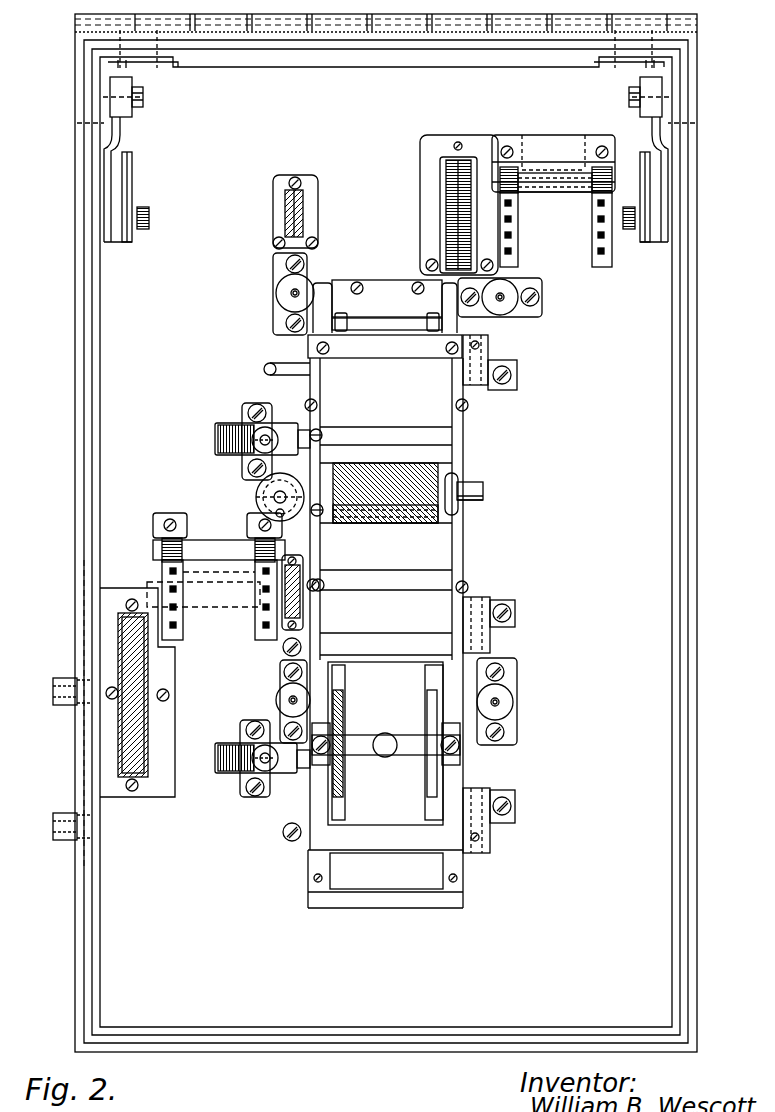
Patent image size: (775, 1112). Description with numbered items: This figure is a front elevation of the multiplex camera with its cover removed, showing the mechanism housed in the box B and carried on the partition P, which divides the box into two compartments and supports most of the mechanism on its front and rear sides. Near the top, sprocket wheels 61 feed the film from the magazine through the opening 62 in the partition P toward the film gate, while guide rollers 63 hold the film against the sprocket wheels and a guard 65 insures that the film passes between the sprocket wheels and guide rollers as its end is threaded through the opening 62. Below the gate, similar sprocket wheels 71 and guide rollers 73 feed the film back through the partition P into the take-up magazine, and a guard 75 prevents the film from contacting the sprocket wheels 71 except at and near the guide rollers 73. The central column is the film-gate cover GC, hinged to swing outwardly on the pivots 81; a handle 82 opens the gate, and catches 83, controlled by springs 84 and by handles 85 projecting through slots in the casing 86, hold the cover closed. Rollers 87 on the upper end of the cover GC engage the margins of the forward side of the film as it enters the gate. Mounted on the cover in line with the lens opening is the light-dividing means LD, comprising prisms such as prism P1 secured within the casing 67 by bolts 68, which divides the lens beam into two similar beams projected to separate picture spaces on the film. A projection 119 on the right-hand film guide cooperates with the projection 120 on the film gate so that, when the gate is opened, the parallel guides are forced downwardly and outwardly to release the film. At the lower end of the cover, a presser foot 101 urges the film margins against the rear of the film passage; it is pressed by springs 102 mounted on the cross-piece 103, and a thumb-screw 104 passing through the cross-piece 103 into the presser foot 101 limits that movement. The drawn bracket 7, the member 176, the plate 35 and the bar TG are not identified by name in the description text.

The box B is at (706, 422).
The partition P is at (386, 542).
The guide bracket 176 is at (290, 205).
The roller bracket 7 is at (290, 291).
The spring plate 35 is at (458, 158).
The opening in the partition 62 is at (548, 168).
The guide rollers 63 is at (515, 192).
The guard 65 is at (555, 195).
The sprocket wheels 61 is at (592, 256).
The top gauge bar TG is at (382, 290).
The rollers 87 is at (341, 315).
The film-gate cover GC is at (465, 424).
The casing 67 is at (386, 481).
The light-dividing means LD is at (438, 478).
The prism P1 is at (408, 523).
The projection 119 is at (484, 489).
The projection on the film gate 120 is at (478, 500).
The bolts 68 is at (318, 432).
The handle 82 is at (265, 365).
The springs 84 is at (238, 428).
The casing 86 is at (286, 438).
The handles 85 is at (262, 450).
The catches 83 is at (322, 455).
The guide rollers 73 is at (258, 550).
The sprocket wheels 71 is at (266, 616).
The guard 75 is at (217, 590).
The pivots 81 is at (489, 352).
The presser foot 101 is at (428, 674).
The springs 102 is at (340, 720).
The cross-piece 103 is at (410, 746).
The thumb-screw 104 is at (386, 736).